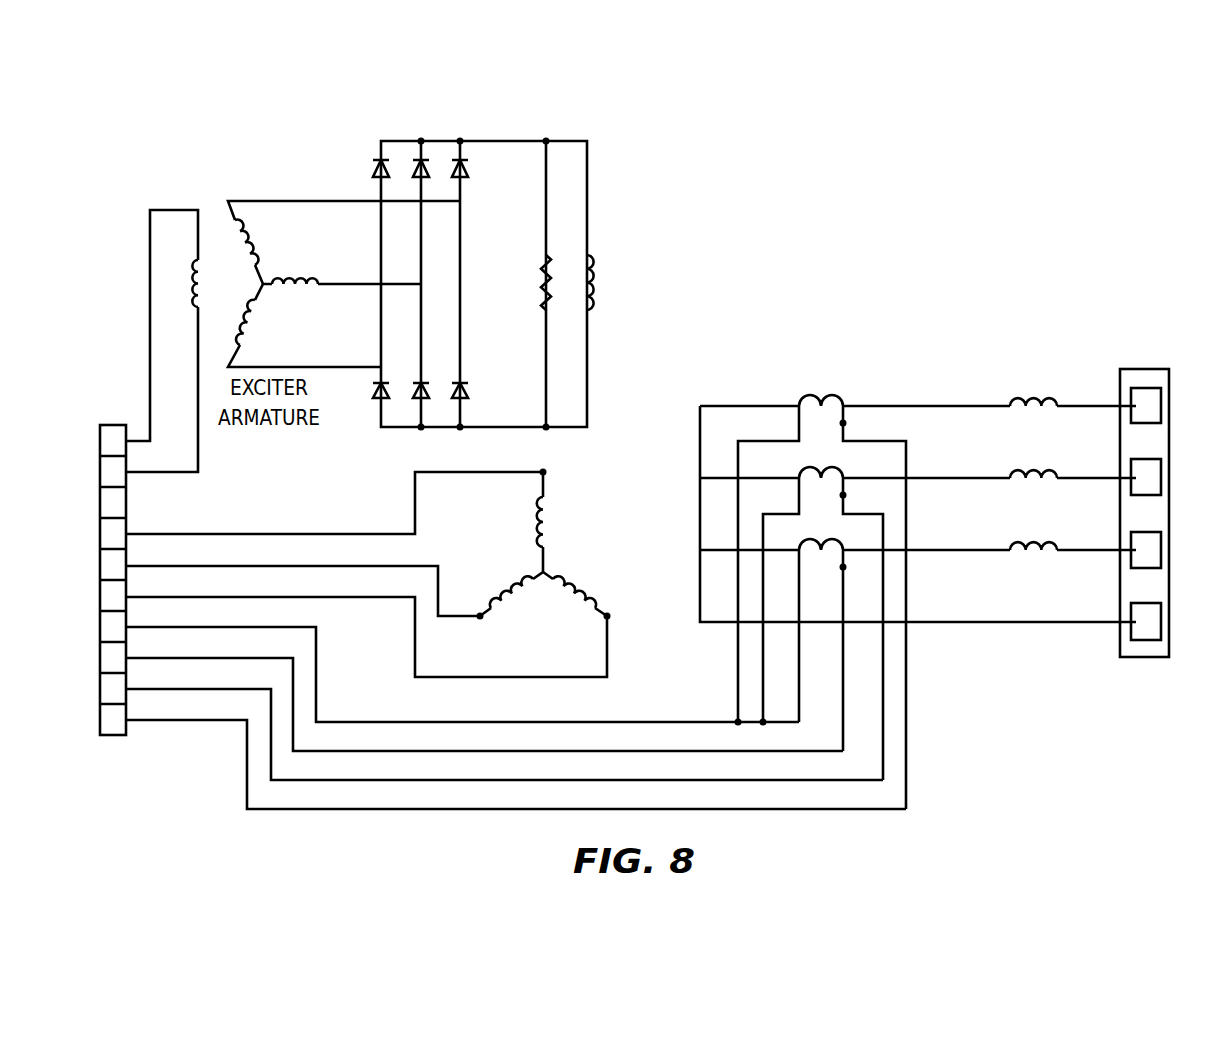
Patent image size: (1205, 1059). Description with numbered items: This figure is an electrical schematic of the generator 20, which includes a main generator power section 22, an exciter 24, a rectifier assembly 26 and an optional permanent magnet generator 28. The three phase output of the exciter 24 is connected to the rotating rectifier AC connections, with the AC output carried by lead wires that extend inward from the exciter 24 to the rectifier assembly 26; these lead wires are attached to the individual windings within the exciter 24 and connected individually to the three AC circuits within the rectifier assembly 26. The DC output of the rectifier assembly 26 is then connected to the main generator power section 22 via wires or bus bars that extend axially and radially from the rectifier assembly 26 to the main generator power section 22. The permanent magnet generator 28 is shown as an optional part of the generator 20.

The generator 20 is at (963, 140).
The main generator power section 22 is at (628, 232).
The exciter 24 is at (197, 120).
The rectifier assembly 26 is at (483, 93).
The permanent magnet generator (PMG) 28 is at (570, 548).